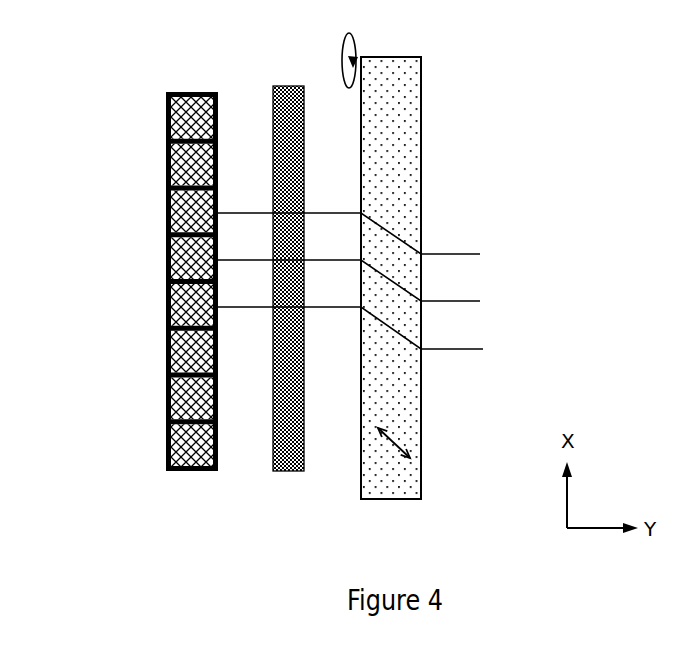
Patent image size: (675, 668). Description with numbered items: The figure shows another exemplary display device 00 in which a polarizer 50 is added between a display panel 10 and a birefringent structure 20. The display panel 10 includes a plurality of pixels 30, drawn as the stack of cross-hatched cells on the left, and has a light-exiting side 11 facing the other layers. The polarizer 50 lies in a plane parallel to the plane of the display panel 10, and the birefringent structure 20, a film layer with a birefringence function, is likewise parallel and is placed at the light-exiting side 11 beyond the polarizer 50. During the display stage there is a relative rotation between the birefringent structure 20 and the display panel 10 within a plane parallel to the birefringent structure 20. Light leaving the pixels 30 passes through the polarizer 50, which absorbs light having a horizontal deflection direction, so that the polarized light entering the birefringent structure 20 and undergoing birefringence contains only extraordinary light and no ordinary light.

The display device 00 is at (387, 25).
The display panel 10 is at (180, 472).
The light-exiting side 11 is at (217, 430).
The birefringent structure 20 is at (391, 499).
The pixels 30 is at (167, 228).
The polarizer 50 is at (292, 472).